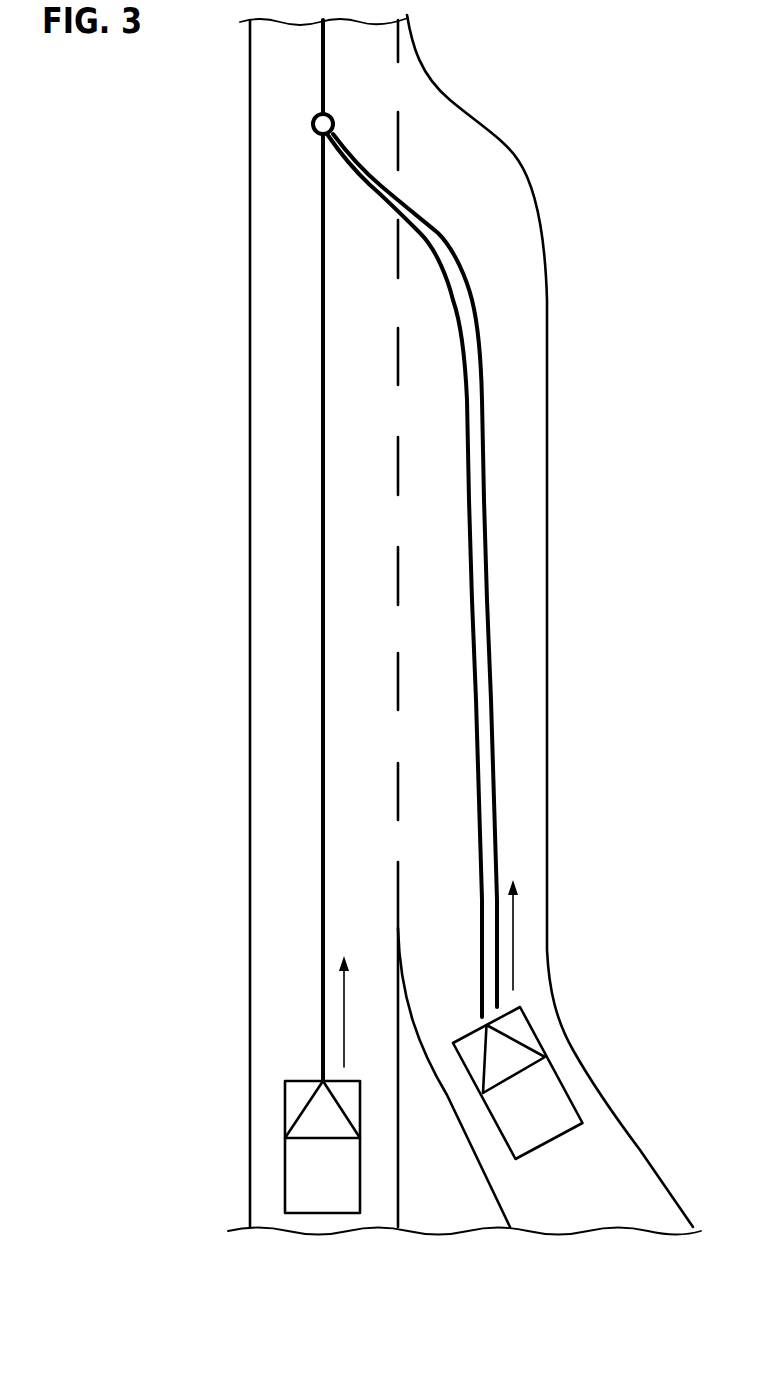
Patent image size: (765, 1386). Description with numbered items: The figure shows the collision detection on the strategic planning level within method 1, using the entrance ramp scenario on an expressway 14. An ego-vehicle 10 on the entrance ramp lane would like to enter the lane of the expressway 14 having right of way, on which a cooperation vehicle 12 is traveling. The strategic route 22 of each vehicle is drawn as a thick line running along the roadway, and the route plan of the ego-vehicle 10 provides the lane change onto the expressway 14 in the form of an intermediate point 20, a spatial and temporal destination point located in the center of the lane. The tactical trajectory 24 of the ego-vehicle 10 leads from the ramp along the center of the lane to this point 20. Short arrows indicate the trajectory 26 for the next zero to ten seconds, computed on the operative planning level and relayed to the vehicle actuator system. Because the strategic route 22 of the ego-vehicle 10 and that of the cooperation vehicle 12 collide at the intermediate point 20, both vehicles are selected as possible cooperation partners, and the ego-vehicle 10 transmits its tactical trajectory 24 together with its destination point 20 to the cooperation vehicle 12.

The method 1 is at (576, 121).
The ego-vehicle 10 is at (520, 1122).
The cooperation vehicle 12 is at (308, 1190).
The expressway 14 is at (258, 253).
The intermediate point 20 is at (343, 186).
The strategic route 22 is at (323, 405).
The tactical trajectory 24 is at (470, 512).
The trajectory 26 is at (343, 995).